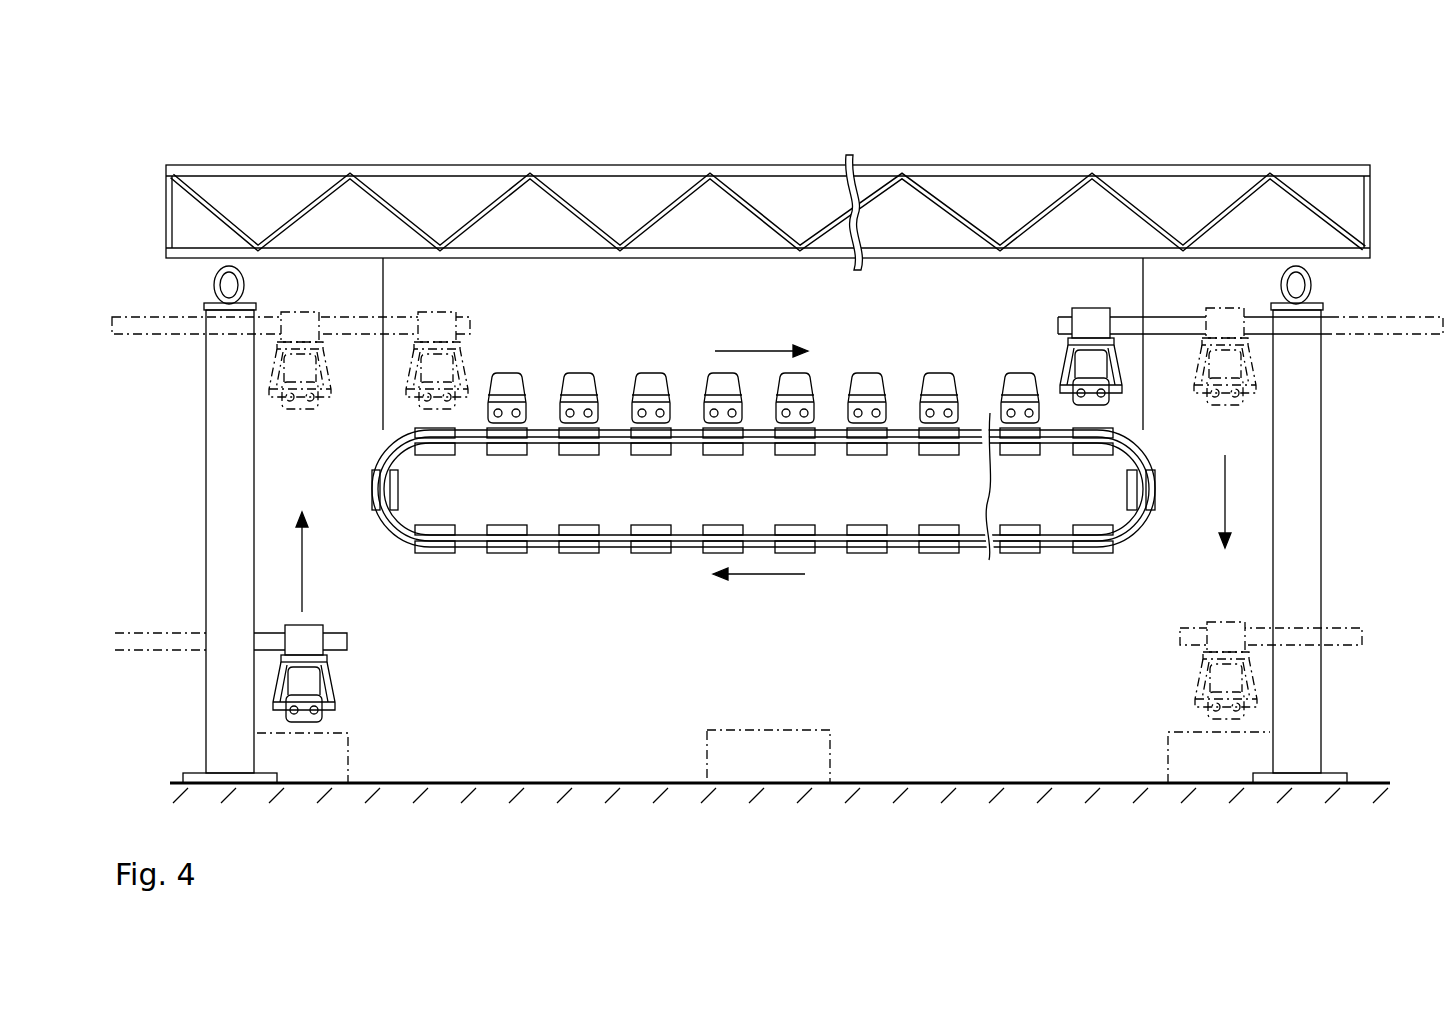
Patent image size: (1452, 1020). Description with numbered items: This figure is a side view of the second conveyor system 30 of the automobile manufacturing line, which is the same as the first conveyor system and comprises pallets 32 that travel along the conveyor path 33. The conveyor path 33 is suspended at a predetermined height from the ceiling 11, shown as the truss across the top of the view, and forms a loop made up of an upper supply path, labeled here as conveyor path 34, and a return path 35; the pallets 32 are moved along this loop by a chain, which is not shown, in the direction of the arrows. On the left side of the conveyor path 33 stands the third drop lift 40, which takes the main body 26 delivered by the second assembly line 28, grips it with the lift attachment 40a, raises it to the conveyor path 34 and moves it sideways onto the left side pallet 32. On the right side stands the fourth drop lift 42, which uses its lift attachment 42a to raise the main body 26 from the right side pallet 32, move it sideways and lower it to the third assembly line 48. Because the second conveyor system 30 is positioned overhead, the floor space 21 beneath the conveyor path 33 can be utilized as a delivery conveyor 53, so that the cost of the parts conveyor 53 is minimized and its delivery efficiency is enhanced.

The ceiling 11 is at (494, 165).
The second conveyor system 30 is at (340, 156).
The third drop lift 40 is at (207, 545).
The fourth drop lift 42 is at (1332, 503).
The lift attachment 40a is at (273, 367).
The lift attachment 42a is at (1062, 368).
The main body 26 is at (297, 408).
The conveyor path 33 is at (953, 312).
The conveyor path 34 is at (827, 427).
The return path 35 is at (904, 568).
The pallet 32 is at (673, 425).
The floor space 21 is at (582, 783).
The second assembly line 28 is at (268, 730).
The delivery conveyor 53 is at (722, 730).
The third assembly line 48 is at (1183, 730).